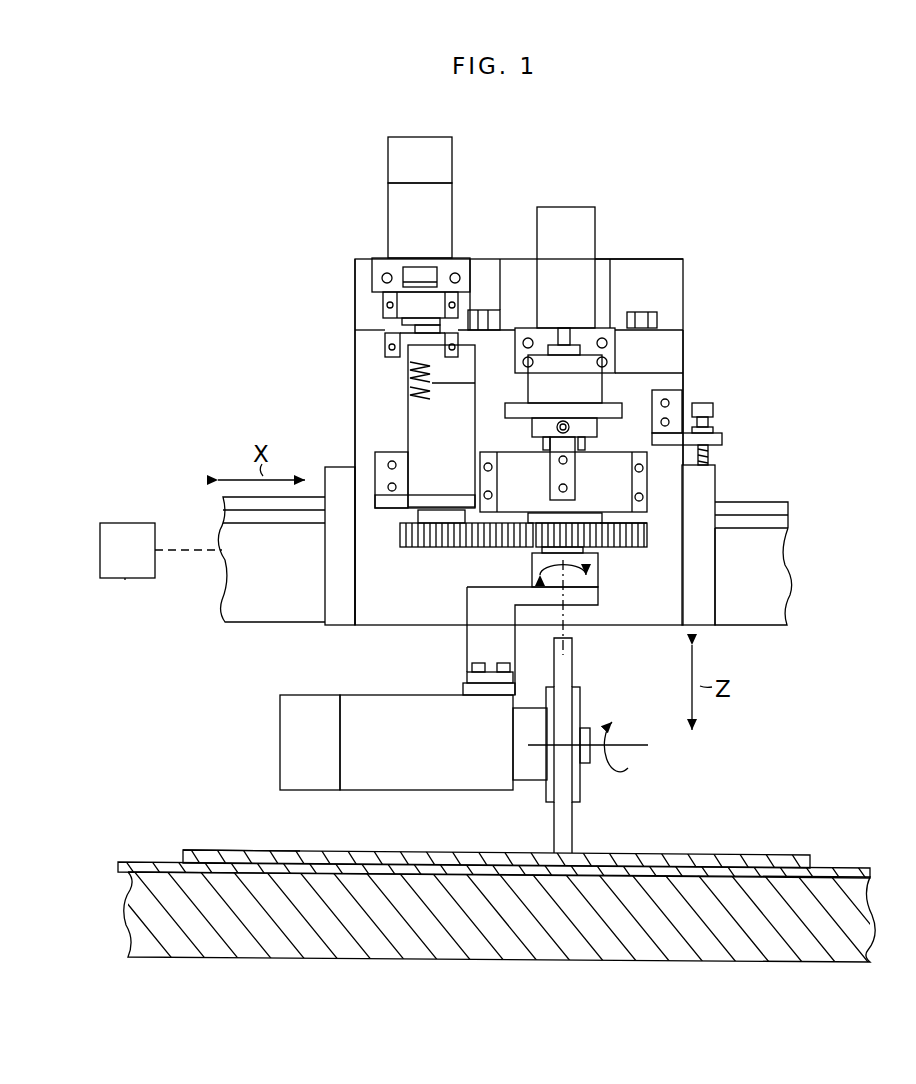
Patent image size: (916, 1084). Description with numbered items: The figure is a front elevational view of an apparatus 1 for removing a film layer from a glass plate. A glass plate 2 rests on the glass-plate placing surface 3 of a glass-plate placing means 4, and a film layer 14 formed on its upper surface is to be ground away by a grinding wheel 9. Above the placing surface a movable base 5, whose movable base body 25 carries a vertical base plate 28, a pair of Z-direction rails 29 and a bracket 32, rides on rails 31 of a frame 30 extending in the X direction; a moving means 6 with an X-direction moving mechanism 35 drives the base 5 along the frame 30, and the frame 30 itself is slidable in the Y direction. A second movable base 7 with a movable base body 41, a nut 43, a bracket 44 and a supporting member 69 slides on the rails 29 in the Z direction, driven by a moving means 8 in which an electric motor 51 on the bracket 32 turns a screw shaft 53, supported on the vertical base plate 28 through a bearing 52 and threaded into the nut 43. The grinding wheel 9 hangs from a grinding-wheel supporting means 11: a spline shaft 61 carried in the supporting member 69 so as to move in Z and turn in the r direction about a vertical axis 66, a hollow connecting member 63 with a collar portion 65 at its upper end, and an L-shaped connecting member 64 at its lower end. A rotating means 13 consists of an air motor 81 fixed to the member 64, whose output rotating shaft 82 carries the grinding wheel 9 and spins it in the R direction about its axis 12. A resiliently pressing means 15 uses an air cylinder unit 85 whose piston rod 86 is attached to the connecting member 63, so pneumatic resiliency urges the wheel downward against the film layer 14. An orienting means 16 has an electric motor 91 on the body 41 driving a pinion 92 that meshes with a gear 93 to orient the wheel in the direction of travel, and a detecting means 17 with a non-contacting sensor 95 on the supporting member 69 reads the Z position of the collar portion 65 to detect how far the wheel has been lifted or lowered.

The apparatus for removing a film layer on a glass plate 1 is at (735, 268).
The glass plate 2 is at (707, 857).
The glass-plate placing surface 3 is at (830, 864).
The glass-plate placing means 4 is at (868, 916).
The movable base 5 is at (352, 306).
The moving means 6 is at (125, 581).
The movable base 7 is at (612, 318).
The moving means 8 is at (383, 207).
The grinding wheel 9 is at (572, 665).
The grinding-wheel supporting means 11 is at (605, 588).
The axis 12 is at (620, 765).
The rotating means 13 is at (277, 722).
The film layer 14 is at (250, 850).
The resiliently pressing means 15 is at (597, 228).
The orienting means 16 is at (405, 410).
The detecting means 17 is at (585, 412).
The movable base body 25 is at (348, 626).
The vertical base plate 28 is at (497, 270).
The rails 29 is at (488, 312).
The frame 30 is at (750, 622).
The rails 31 is at (752, 505).
The bracket 32 is at (380, 262).
The X-direction moving mechanism 35 is at (127, 523).
The movable base body 41 is at (660, 342).
The nut 43 is at (390, 345).
The bracket 44 is at (605, 348).
The electric motor 51 is at (440, 158).
The bearing 52 is at (412, 300).
The screw shaft 53 is at (457, 362).
The spline shaft 61 is at (605, 550).
The hollow connecting member 63 is at (585, 367).
The L-shaped connecting member 64 is at (466, 632).
The collar portion 65 is at (713, 412).
The vertical axis 66 is at (575, 620).
The supporting member 69 is at (617, 485).
The air motor 81 is at (305, 695).
The output rotating shaft 82 is at (590, 770).
The air cylinder unit 85 is at (567, 220).
The piston rod 86 is at (563, 335).
The electric motor 91 is at (425, 442).
The pinion 92 is at (409, 548).
The gear 93 is at (640, 535).
The non-contacting sensor 95 is at (680, 455).